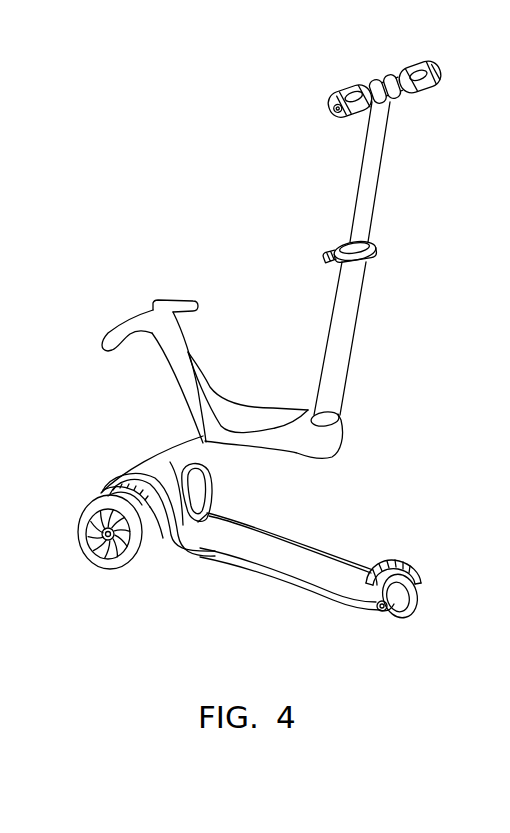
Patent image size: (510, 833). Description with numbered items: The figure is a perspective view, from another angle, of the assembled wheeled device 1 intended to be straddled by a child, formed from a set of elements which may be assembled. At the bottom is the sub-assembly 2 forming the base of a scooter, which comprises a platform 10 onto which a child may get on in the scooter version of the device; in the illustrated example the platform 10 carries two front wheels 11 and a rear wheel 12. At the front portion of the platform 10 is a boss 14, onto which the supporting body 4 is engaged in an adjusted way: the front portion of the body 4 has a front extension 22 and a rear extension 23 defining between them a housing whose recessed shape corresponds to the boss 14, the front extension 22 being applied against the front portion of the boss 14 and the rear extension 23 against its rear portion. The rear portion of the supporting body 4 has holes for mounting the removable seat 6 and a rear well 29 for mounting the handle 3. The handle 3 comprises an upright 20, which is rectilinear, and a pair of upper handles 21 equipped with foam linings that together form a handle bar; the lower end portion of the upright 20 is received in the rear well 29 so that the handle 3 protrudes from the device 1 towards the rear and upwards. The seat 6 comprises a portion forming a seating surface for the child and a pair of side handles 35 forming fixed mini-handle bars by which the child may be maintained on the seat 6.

The wheeled device 1 is at (122, 655).
The sub-assembly forming the base of a scooter 2 is at (357, 542).
The handle 3 is at (315, 169).
The supporting body 4 is at (175, 437).
The removable seat 6 is at (253, 368).
The platform 10 is at (298, 556).
The front wheels 11 is at (79, 513).
The rear wheel 12 is at (407, 613).
The boss 14 is at (153, 512).
The upright 20 is at (358, 290).
The upper handles 21 is at (350, 89).
The front extension 22 is at (120, 468).
The rear extension 23 is at (200, 538).
The rear well 29 is at (340, 411).
The side handles 35 is at (118, 326).